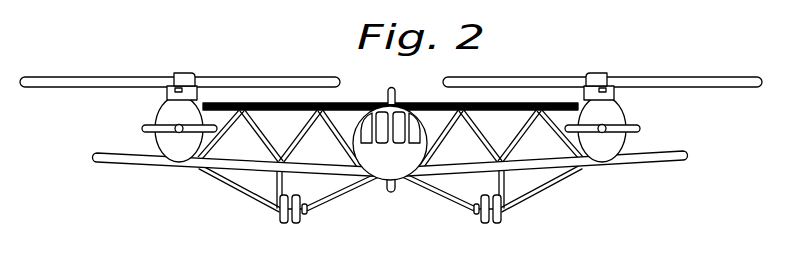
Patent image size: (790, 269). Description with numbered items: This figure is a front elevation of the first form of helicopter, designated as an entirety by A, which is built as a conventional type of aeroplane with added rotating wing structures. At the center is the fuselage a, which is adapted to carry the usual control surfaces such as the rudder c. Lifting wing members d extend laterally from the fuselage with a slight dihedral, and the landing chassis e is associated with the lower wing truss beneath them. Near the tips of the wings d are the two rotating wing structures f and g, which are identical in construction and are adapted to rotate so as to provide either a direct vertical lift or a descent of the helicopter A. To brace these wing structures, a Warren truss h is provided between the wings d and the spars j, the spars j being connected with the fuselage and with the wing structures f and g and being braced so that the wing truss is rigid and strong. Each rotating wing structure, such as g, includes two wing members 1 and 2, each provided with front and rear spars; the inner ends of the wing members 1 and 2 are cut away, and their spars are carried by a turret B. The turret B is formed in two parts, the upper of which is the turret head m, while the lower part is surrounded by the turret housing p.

The helicopter A is at (390, 205).
The turret B is at (170, 78).
The fuselage a is at (404, 168).
The rudder c is at (396, 94).
The lifting wing members d is at (227, 174).
The landing chassis e is at (309, 217).
The rotating wing structure f is at (186, 75).
The rotating wing structure g is at (603, 72).
The Warren truss h is at (266, 140).
The spars j is at (336, 104).
The turret head m is at (165, 93).
The turret housing p is at (168, 100).
The wing member 1 is at (521, 78).
The wing member 2 is at (698, 78).